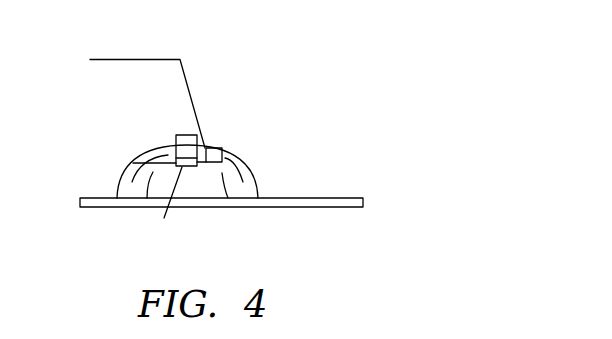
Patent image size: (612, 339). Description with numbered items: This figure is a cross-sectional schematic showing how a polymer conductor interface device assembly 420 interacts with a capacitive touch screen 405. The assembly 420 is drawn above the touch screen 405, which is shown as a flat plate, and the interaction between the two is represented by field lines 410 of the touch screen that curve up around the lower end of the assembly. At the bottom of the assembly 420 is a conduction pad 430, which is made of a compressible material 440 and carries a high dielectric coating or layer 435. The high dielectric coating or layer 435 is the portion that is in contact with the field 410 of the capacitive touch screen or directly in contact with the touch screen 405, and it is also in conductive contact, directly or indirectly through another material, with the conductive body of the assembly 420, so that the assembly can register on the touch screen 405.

The capacitive touch screen 405 is at (363, 203).
The field lines 410 is at (258, 190).
The polymer conductor interface device assembly 420 is at (191, 75).
The conduction pad 430 is at (209, 148).
The high dielectric coating or layer 435 is at (164, 218).
The compressible material 440 is at (196, 136).